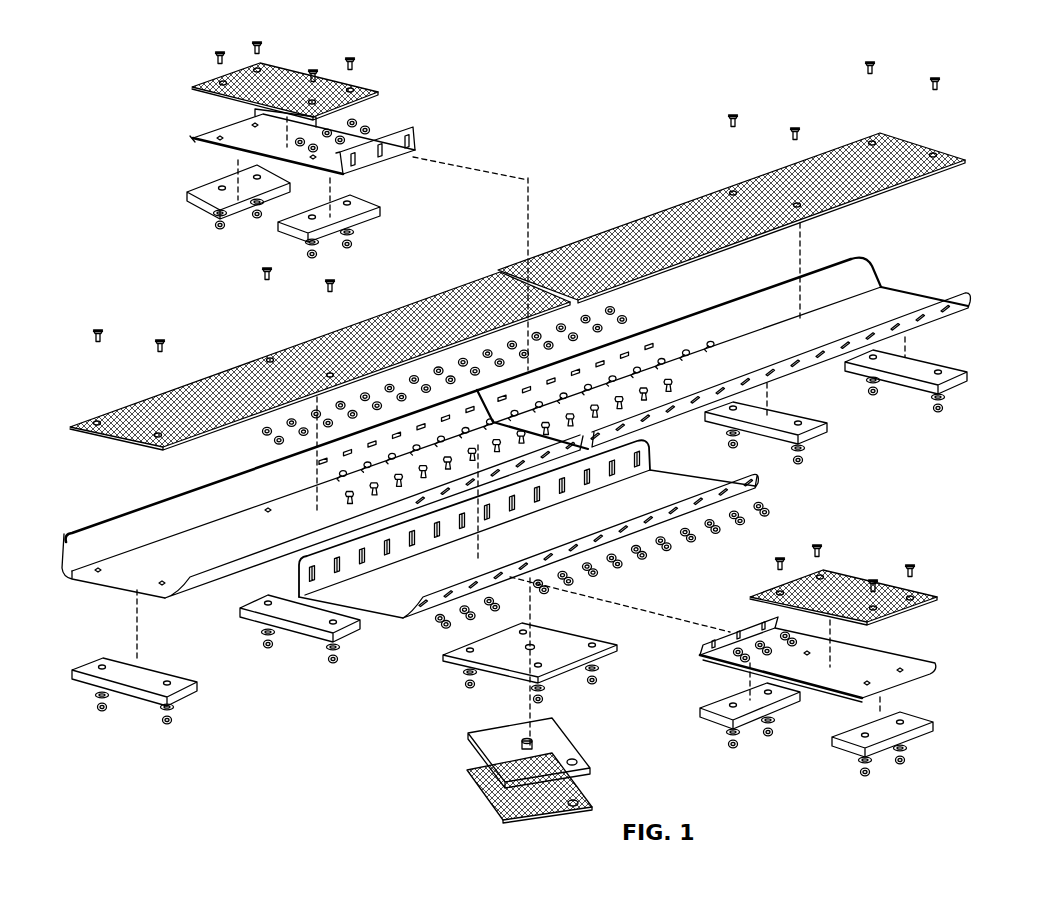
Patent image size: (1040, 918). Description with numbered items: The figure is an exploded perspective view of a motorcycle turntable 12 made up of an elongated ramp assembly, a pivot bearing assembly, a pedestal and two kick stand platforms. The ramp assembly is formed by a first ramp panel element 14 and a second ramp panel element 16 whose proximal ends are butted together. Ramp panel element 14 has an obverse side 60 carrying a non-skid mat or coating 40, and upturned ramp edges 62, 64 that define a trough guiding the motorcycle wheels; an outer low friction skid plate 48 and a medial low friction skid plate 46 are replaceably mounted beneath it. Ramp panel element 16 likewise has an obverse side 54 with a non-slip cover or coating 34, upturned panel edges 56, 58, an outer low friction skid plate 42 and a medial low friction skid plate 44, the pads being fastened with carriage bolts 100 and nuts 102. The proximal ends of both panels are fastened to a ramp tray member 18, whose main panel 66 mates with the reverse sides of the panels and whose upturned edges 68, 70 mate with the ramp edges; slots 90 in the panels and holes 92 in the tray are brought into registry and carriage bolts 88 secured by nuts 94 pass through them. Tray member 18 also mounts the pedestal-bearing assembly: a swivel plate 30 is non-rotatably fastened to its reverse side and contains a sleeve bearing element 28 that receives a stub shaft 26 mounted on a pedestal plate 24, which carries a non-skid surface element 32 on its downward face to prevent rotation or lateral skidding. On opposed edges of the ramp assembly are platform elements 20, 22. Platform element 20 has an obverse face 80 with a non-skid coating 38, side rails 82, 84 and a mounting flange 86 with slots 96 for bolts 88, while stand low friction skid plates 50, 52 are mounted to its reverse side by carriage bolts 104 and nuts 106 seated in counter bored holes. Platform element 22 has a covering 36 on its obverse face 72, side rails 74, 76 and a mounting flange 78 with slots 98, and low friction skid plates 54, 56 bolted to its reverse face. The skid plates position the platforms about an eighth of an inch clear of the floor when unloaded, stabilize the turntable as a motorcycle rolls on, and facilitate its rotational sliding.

The motorcycle turntable 12 is at (585, 74).
The first ramp panel element 14 is at (471, 448).
The second ramp panel element 16 is at (745, 364).
The ramp tray member 18 is at (562, 551).
The platform element 20 is at (833, 639).
The platform element 22 is at (310, 141).
The pedestal plate 24 is at (505, 737).
The stub shaft 26 is at (527, 738).
The sleeve bearing element 28 is at (534, 645).
The swivel plate 30 is at (519, 652).
The non-skid surface element 32 is at (510, 818).
The cover or coating 34 is at (680, 215).
The coating or covering 36 is at (372, 84).
The non-skid coating or covering 38 is at (810, 580).
The non-skid mat or coating 40 is at (435, 298).
The outer low friction skid plate 42 is at (925, 366).
The medial low friction skid plate 44 is at (780, 411).
The medial low friction skid plate 46 is at (262, 620).
The outer low friction skid plate 48 is at (95, 681).
The stand low friction skid plate 50 is at (861, 772).
The stand low friction skid plate 52 is at (707, 716).
The obverse side 54 is at (195, 198).
The upturned panel edge 56 is at (282, 226).
The upturned panel edge 58 is at (855, 262).
The obverse side 60 is at (125, 583).
The upturned ramp edge 62 is at (208, 578).
The upturned ramp edge 64 is at (187, 498).
The main panel 66 is at (583, 562).
The upturned edge 68 is at (443, 603).
The upturned edge 70 is at (640, 444).
The obverse face 72 is at (255, 143).
The side rail 74 is at (193, 140).
The side rail 76 is at (257, 113).
The mounting flange 78 is at (406, 147).
The obverse face 80 is at (905, 683).
The side rail 82 is at (745, 671).
The side rail 84 is at (915, 657).
The mounting flange 86 is at (719, 616).
The carriage bolt 88 is at (688, 352).
The slot 90 is at (748, 384).
The hole 92 is at (762, 478).
The nut 94 is at (762, 512).
The slot 96 is at (737, 632).
The slot 98 is at (420, 148).
The carriage bolt 100 is at (875, 62).
The nut 102 is at (872, 398).
The carriage bolt 104 is at (313, 70).
The nut 106 is at (865, 780).